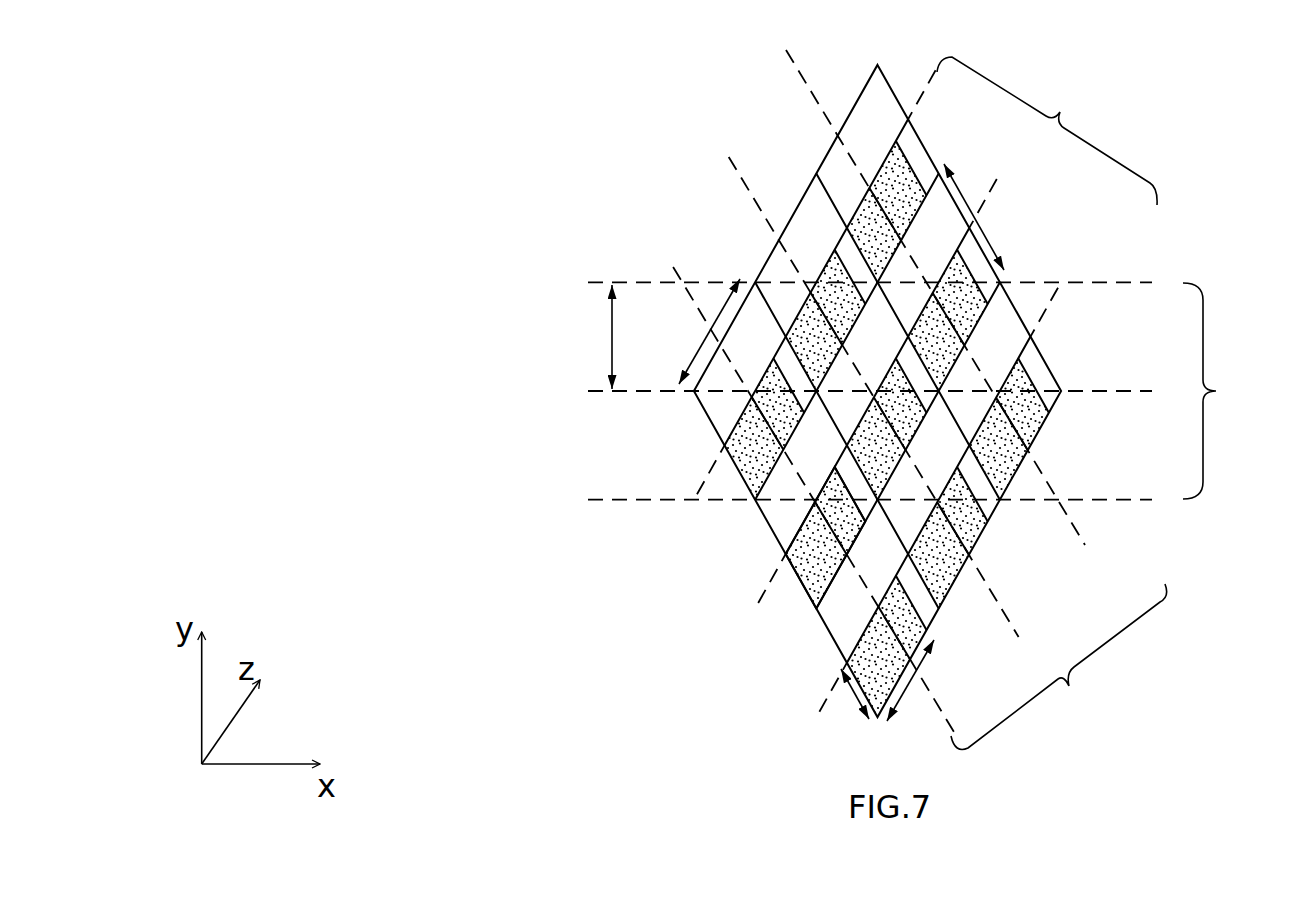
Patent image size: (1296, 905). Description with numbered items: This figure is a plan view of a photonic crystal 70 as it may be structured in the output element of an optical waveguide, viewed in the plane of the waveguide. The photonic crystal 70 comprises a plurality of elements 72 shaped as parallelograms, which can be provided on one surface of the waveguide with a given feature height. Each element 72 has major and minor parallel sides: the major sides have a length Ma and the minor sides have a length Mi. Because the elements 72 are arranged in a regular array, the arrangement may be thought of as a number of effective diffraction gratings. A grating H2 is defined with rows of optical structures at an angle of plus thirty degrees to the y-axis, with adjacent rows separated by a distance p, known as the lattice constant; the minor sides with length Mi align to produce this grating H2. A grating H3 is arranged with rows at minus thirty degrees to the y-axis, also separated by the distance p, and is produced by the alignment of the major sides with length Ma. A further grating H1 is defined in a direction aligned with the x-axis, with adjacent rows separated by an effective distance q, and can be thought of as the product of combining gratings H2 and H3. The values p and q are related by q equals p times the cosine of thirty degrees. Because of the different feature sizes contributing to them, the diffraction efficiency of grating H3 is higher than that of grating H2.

The photonic crystal 70 is at (540, 404).
The element 72 is at (808, 596).
The effective distance q is at (599, 337).
The lattice constant p is at (847, 274).
The minor side length Mi is at (850, 712).
The major side length Ma is at (938, 680).
The grating H1 is at (1226, 391).
The grating H2 is at (1059, 667).
The grating H3 is at (1047, 131).